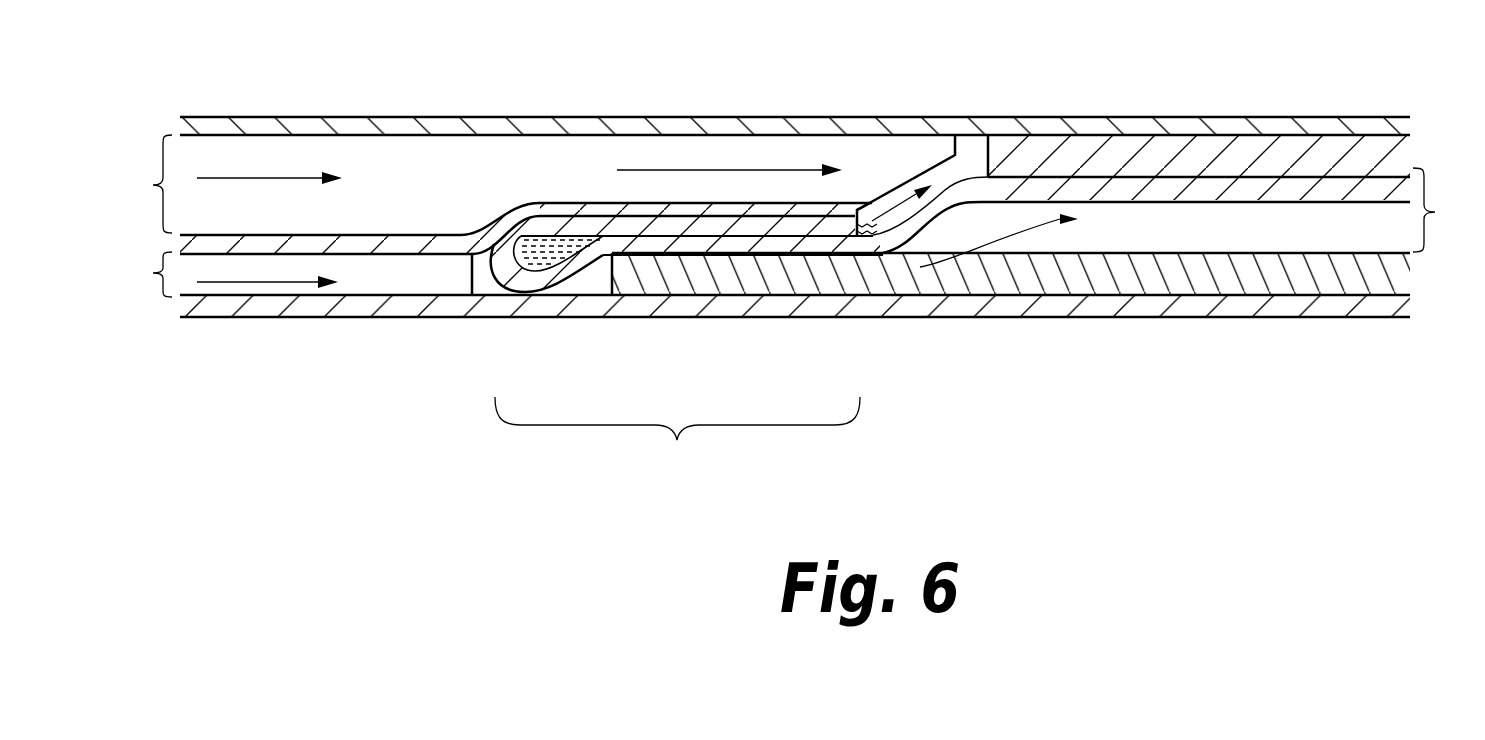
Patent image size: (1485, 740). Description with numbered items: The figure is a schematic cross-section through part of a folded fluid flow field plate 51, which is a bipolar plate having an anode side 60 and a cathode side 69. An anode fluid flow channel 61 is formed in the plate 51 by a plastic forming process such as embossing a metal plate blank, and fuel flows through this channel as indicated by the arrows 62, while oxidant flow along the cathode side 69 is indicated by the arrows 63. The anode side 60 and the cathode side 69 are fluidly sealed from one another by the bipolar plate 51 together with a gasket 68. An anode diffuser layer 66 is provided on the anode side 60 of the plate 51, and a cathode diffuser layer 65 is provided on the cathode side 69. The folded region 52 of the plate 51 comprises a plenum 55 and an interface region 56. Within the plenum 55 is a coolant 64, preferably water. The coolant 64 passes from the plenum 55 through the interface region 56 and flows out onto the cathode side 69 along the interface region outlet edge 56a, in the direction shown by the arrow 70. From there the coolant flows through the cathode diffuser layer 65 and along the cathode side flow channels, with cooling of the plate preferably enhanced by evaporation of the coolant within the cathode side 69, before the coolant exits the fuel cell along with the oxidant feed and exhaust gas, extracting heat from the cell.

The fluid flow field plate 51 is at (1443, 210).
The folded region 52 is at (677, 435).
The plenum 55 is at (538, 263).
The interface region 56 is at (615, 238).
The interface region outlet edge 56a is at (858, 243).
The anode side 60 is at (146, 274).
The anode fluid flow channel 61 is at (1245, 240).
The fuel flow arrows 62 is at (637, 249).
The oxidant flow arrows 63 is at (519, 163).
The coolant 64 is at (476, 291).
The cathode diffuser layer 65 is at (1252, 123).
The anode diffuser layer 66 is at (1355, 288).
The gasket 68 is at (217, 245).
The cathode side 69 is at (146, 184).
The coolant flow arrow 70 is at (895, 207).